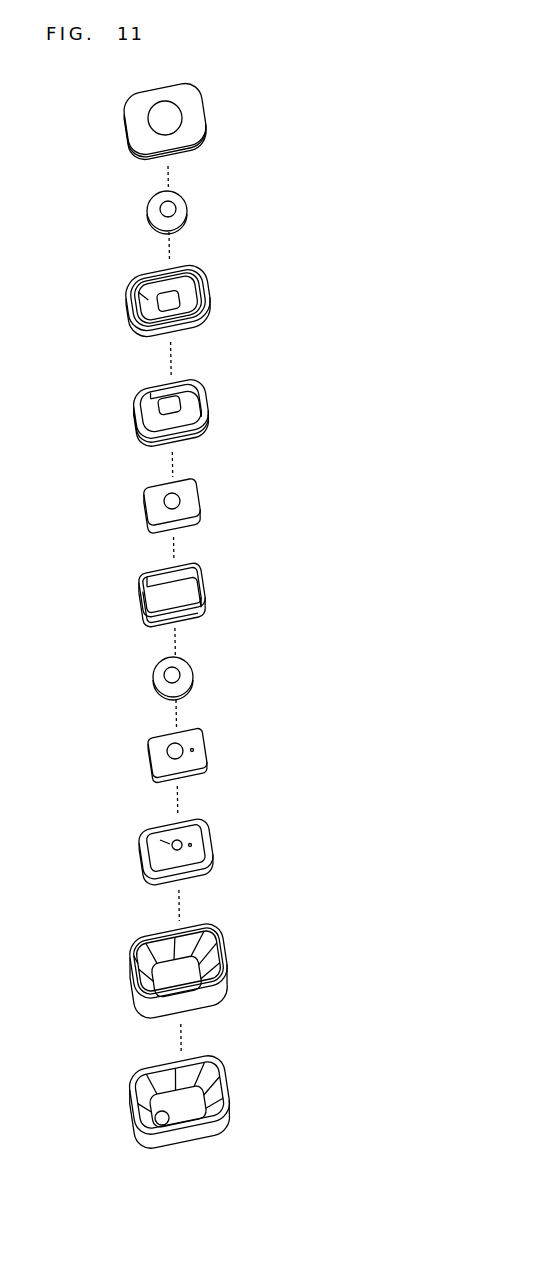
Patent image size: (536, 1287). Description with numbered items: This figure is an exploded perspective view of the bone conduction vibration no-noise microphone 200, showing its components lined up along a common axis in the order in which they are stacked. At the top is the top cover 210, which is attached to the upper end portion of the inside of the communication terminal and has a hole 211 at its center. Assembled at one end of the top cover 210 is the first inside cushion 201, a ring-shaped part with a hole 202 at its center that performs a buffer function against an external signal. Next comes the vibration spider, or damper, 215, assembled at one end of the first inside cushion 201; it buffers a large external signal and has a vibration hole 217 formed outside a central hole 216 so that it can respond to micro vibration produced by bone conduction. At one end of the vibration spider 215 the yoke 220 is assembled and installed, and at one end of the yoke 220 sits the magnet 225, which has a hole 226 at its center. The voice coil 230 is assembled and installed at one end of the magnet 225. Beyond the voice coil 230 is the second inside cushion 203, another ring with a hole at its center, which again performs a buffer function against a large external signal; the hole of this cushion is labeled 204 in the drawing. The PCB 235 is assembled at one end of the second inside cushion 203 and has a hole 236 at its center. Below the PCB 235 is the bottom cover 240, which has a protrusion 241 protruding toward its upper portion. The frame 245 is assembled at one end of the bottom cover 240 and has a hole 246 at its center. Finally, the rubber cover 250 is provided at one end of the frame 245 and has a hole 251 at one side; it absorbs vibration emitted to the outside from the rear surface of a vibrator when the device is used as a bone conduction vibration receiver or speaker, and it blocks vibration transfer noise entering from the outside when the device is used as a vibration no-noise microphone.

The bone conduction vibration no-noise microphone 200 is at (390, 288).
The top cover 210 is at (207, 116).
The hole 211 is at (133, 101).
The first inside cushion 201 is at (189, 208).
The hole 202 is at (150, 209).
The vibration spider (damper) 215 is at (213, 300).
The central hole 216 is at (130, 289).
The vibration hole 217 is at (133, 330).
The yoke 220 is at (207, 395).
The magnet 225 is at (203, 500).
The hole 226 is at (143, 500).
The voice coil 230 is at (208, 600).
The second inside cushion 203 is at (193, 676).
The hole of second ring member 204 is at (155, 672).
The PCB 235 is at (205, 757).
The hole 236 is at (148, 740).
The bottom cover 240 is at (216, 853).
The protrusion 241 is at (148, 836).
The frame 245 is at (225, 985).
The hole 246 is at (133, 975).
The rubber cover 250 is at (233, 1108).
The hole 251 is at (135, 1088).